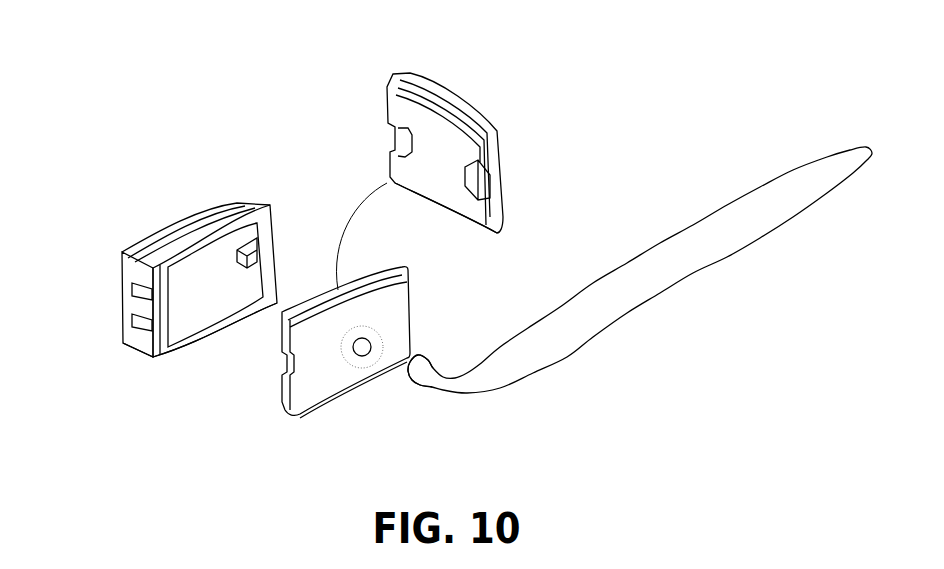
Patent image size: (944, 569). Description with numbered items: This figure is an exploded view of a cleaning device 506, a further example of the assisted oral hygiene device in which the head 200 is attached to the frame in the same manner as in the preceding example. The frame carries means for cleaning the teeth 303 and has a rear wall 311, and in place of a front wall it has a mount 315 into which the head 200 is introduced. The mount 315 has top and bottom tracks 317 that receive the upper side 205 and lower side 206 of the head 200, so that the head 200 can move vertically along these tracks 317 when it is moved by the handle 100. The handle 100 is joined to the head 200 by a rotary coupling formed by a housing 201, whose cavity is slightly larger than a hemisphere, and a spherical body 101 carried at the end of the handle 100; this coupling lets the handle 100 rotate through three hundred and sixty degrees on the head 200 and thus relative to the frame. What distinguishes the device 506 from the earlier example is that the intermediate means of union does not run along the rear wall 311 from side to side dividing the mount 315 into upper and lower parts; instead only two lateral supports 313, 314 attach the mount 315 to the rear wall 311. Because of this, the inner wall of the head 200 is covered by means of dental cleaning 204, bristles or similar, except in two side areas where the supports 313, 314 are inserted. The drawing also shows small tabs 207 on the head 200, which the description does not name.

The handle 100 is at (718, 227).
The spherical body 101 is at (427, 358).
The head 200 is at (505, 148).
The housing 201 is at (370, 358).
The means of dental cleaning 204 is at (437, 125).
The upper side of the head 205 is at (473, 105).
The lower side of the head 206 is at (505, 228).
The plate clip tab 207 is at (397, 135).
The means for cleaning the teeth of the frame 303 is at (213, 237).
The rear wall 311 is at (120, 267).
The lateral support 313 is at (130, 303).
The lateral support 314 is at (283, 227).
The frame or mount 315 is at (150, 357).
The top and bottom tracks 317 is at (183, 360).
The cleaning device 506 is at (255, 166).